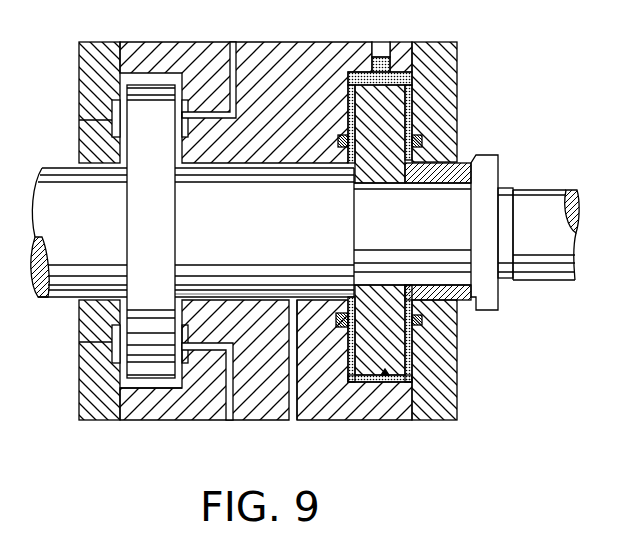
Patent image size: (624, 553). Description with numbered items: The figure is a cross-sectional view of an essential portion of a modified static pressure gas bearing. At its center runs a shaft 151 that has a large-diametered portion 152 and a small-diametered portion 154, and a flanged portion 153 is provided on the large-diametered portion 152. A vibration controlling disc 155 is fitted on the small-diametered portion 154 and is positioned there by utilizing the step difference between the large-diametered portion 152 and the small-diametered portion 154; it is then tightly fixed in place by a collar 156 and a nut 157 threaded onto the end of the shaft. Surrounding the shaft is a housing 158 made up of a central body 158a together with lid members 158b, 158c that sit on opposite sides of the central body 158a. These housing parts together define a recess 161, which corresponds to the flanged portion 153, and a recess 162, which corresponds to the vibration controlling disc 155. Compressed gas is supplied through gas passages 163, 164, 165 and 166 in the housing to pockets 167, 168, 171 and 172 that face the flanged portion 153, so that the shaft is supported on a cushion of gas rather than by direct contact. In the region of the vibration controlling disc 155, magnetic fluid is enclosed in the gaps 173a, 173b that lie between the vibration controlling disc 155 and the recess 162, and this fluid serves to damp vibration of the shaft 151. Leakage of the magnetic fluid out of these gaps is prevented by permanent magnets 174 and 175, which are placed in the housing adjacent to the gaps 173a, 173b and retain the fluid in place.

The shaft 151 is at (263, 307).
The large-diametered portion 152 is at (290, 243).
The flanged portion 153 is at (170, 210).
The small-diametered portion 154 is at (433, 238).
The vibration controlling disc 155 is at (405, 43).
The collar 156 is at (436, 165).
The nut 157 is at (490, 172).
The housing 158 is at (325, 34).
The central body 158a is at (345, 405).
The lid member 158b is at (100, 413).
The lid member 158c is at (450, 375).
The recess 161 is at (150, 388).
The recess 162 is at (385, 381).
The gas passage 163 is at (79, 342).
The gas passage 164 is at (226, 415).
The gas passage 165 is at (79, 120).
The gas passage 166 is at (233, 42).
The pocket 167 is at (112, 353).
The pocket 168 is at (198, 355).
The pocket 171 is at (112, 110).
The pocket 172 is at (194, 119).
The gap 173a is at (348, 117).
The gap 173b is at (390, 86).
The permanent magnet 174 is at (343, 313).
The permanent magnet 175 is at (424, 318).